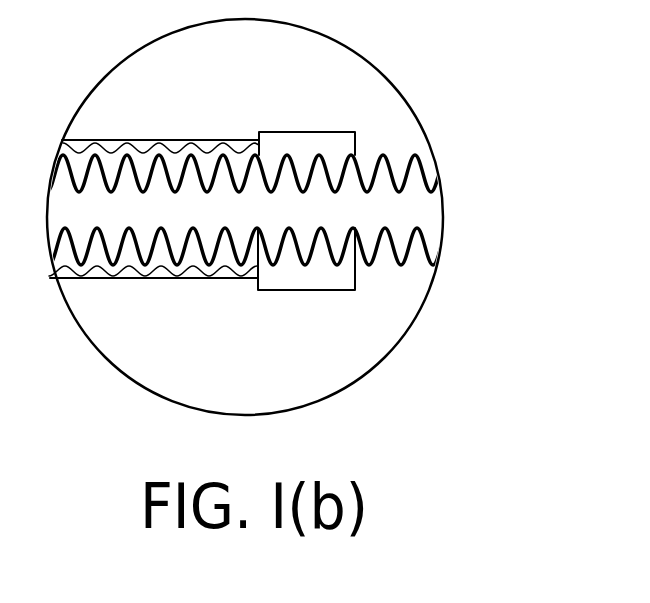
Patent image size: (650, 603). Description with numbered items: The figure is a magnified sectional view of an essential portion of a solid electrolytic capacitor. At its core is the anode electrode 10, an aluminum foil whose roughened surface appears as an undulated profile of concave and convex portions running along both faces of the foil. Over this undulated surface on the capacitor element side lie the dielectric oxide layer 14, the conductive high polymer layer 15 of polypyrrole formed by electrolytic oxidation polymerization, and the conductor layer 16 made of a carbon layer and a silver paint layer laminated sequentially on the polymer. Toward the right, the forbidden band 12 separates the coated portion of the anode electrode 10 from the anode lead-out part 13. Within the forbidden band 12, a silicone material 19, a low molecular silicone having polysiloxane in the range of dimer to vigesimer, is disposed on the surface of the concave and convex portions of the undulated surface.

The anode electrode 10 is at (390, 219).
The forbidden band 12 is at (305, 290).
The anode lead-out part 13 is at (397, 262).
The dielectric oxide layer 14 is at (205, 148).
The conductive high polymer layer 15 is at (112, 158).
The conductor layer 16 is at (197, 268).
The silicone material 19 is at (355, 132).